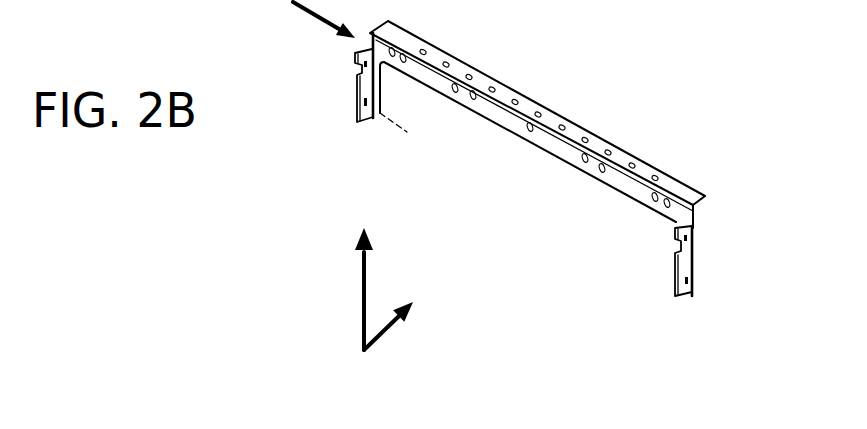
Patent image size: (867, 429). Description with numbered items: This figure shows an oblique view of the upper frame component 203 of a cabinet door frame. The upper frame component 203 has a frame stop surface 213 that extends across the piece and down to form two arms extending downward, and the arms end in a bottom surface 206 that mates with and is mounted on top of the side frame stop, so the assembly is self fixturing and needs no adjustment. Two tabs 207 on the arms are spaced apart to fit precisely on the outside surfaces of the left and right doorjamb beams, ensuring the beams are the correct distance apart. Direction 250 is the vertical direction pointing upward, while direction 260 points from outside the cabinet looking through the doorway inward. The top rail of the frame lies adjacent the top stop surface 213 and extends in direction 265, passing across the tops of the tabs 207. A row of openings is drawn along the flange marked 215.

The upper frame component 203 is at (537, 150).
The bottom surface 206 is at (412, 135).
The tabs 207 is at (355, 103).
The frame stop surface 213 is at (620, 186).
The upper flange of support bar 215 is at (618, 157).
The vertical direction 250 is at (363, 300).
The direction 260 is at (388, 328).
The direction 265 is at (322, 18).